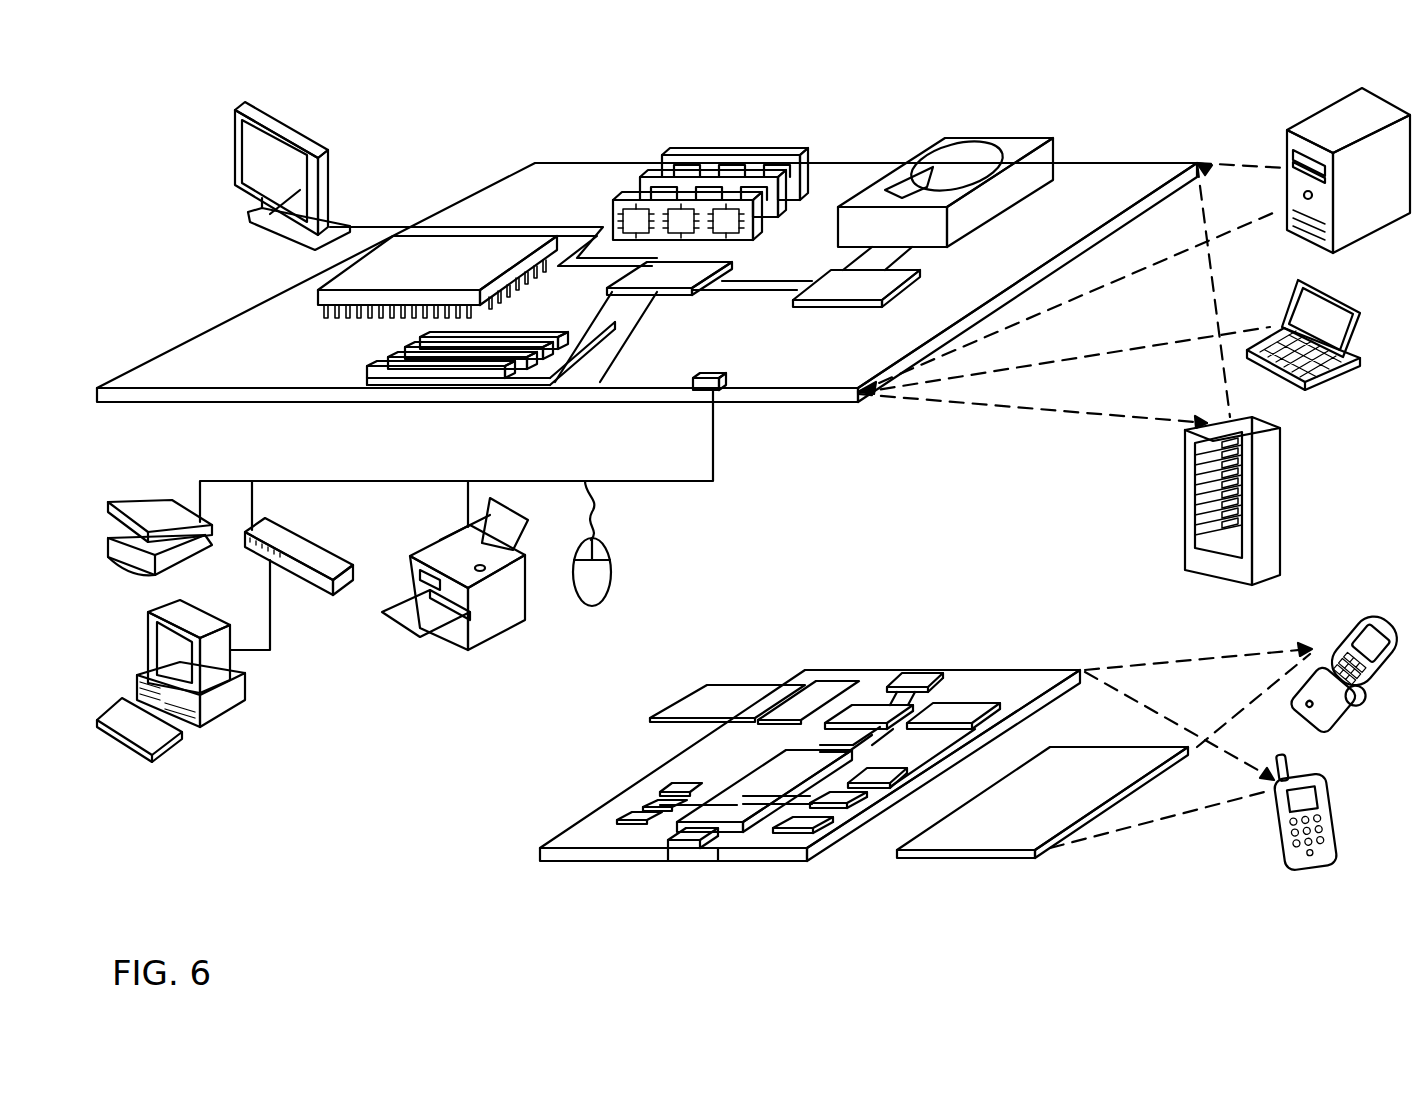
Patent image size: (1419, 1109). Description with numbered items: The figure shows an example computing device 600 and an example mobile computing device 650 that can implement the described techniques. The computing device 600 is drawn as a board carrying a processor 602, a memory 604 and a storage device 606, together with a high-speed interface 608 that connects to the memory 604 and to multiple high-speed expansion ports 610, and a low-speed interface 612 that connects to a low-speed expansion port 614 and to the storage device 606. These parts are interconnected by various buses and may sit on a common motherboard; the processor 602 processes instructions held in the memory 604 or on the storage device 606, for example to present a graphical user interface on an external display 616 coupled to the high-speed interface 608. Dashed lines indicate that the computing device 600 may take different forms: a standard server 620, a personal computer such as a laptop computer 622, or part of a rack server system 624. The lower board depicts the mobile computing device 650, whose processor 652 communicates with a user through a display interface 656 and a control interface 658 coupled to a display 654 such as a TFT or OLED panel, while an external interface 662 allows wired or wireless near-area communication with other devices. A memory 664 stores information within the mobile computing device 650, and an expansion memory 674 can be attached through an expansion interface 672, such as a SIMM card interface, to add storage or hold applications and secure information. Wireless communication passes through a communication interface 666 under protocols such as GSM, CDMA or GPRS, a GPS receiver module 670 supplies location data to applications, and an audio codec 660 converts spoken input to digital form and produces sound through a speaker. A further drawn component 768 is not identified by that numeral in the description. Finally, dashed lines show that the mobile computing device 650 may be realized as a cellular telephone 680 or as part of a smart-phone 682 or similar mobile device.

The computing device 600 is at (450, 131).
The processor 602 is at (317, 293).
The memory 604 is at (670, 157).
The storage device 606 is at (934, 140).
The high-speed interface 608 is at (640, 272).
The high-speed expansion ports 610 is at (385, 357).
The low-speed interface 612 is at (838, 281).
The low-speed expansion port 614 is at (713, 387).
The display 616 is at (236, 106).
The standard server 620 is at (1287, 147).
The laptop computer 622 is at (1357, 310).
The rack server system 624 is at (1185, 527).
The mobile computing device 650 is at (508, 859).
The processor 652 is at (737, 812).
The display 654 is at (998, 835).
The display interface 656 is at (796, 825).
The control interface 658 is at (835, 798).
The audio codec 660 is at (877, 774).
The external interface 662 is at (697, 849).
The memory 664 is at (640, 802).
The communication interface 666 is at (868, 712).
The GPS receiver module 670 is at (926, 670).
The expansion interface 672 is at (805, 686).
The expansion memory 674 is at (707, 687).
The chip 768 is at (953, 712).
The cellular telephone 680 is at (1340, 627).
The smart-phone 682 is at (1277, 815).